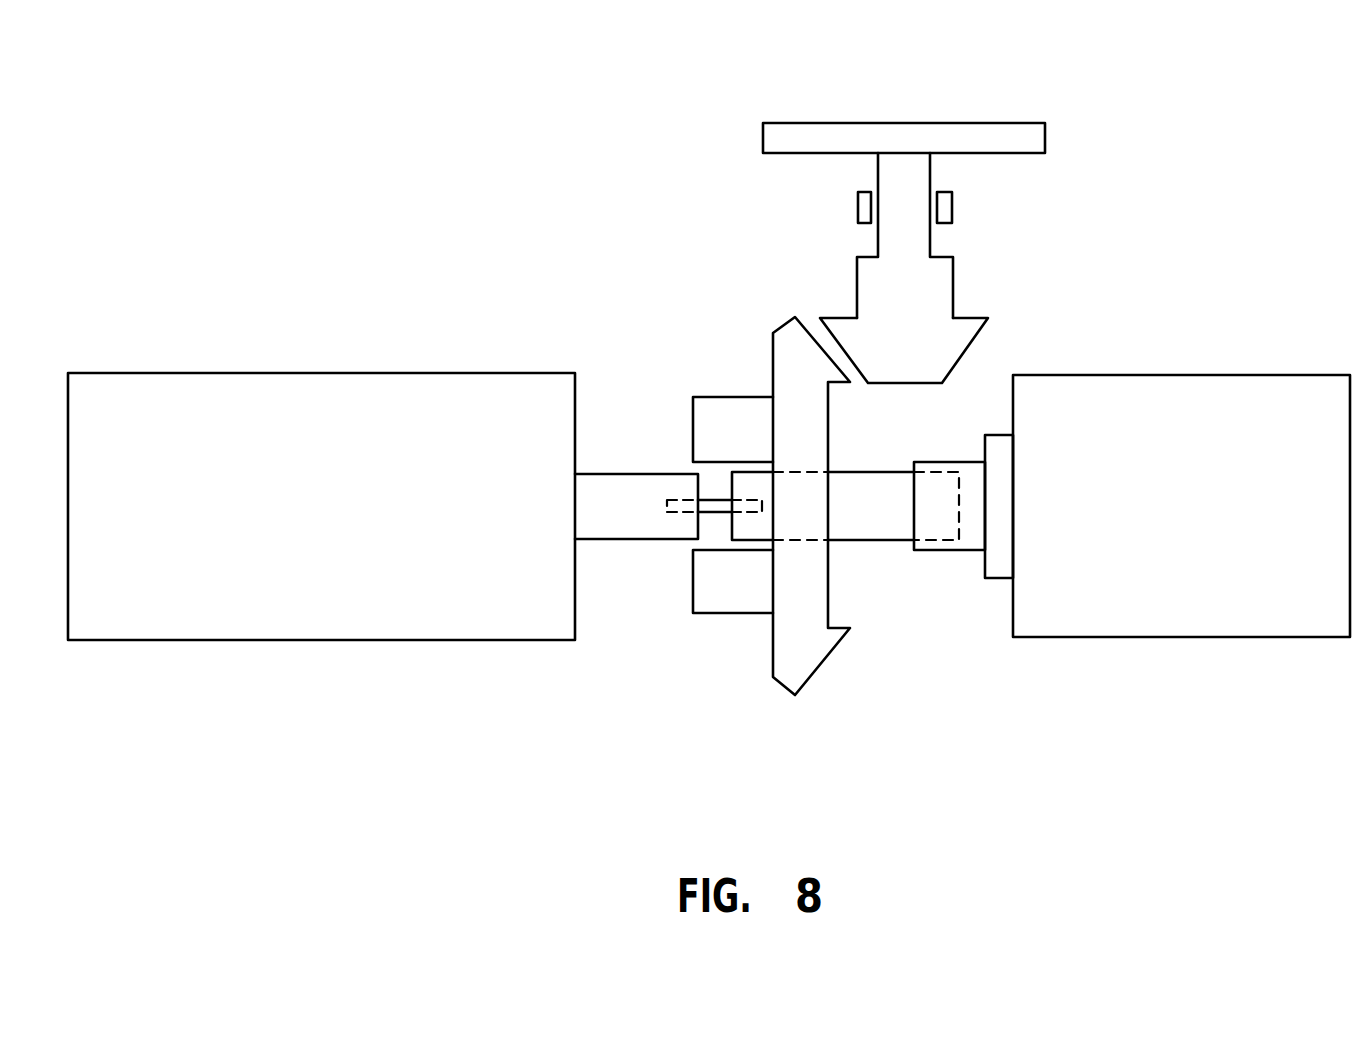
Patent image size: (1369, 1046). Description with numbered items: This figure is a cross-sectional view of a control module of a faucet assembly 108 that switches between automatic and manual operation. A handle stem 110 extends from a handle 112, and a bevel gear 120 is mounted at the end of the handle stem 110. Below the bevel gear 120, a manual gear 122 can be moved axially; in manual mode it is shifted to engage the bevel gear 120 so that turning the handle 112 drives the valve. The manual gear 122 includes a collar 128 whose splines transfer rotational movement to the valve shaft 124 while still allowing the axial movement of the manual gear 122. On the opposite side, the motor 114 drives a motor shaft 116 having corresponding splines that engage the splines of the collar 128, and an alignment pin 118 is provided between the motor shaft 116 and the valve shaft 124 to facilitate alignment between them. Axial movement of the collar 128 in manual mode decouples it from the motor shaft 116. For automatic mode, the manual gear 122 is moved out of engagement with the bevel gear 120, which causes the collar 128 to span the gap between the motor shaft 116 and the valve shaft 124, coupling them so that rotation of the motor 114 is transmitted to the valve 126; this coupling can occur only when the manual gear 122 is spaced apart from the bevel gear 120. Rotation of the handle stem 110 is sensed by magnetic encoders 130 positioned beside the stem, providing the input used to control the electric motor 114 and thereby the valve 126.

The faucet assembly 108 is at (588, 258).
The handle stem 110 is at (922, 240).
The handle 112 is at (958, 132).
The motor 114 is at (362, 507).
The motor shaft 116 is at (633, 530).
The alignment pin 118 is at (713, 507).
The bevel gear 120 is at (955, 347).
The manual gear 122 is at (812, 660).
The valve shaft 124 is at (870, 523).
The valve 126 is at (1224, 522).
The collar 128 is at (733, 600).
The magnetic encoders 130 is at (857, 207).